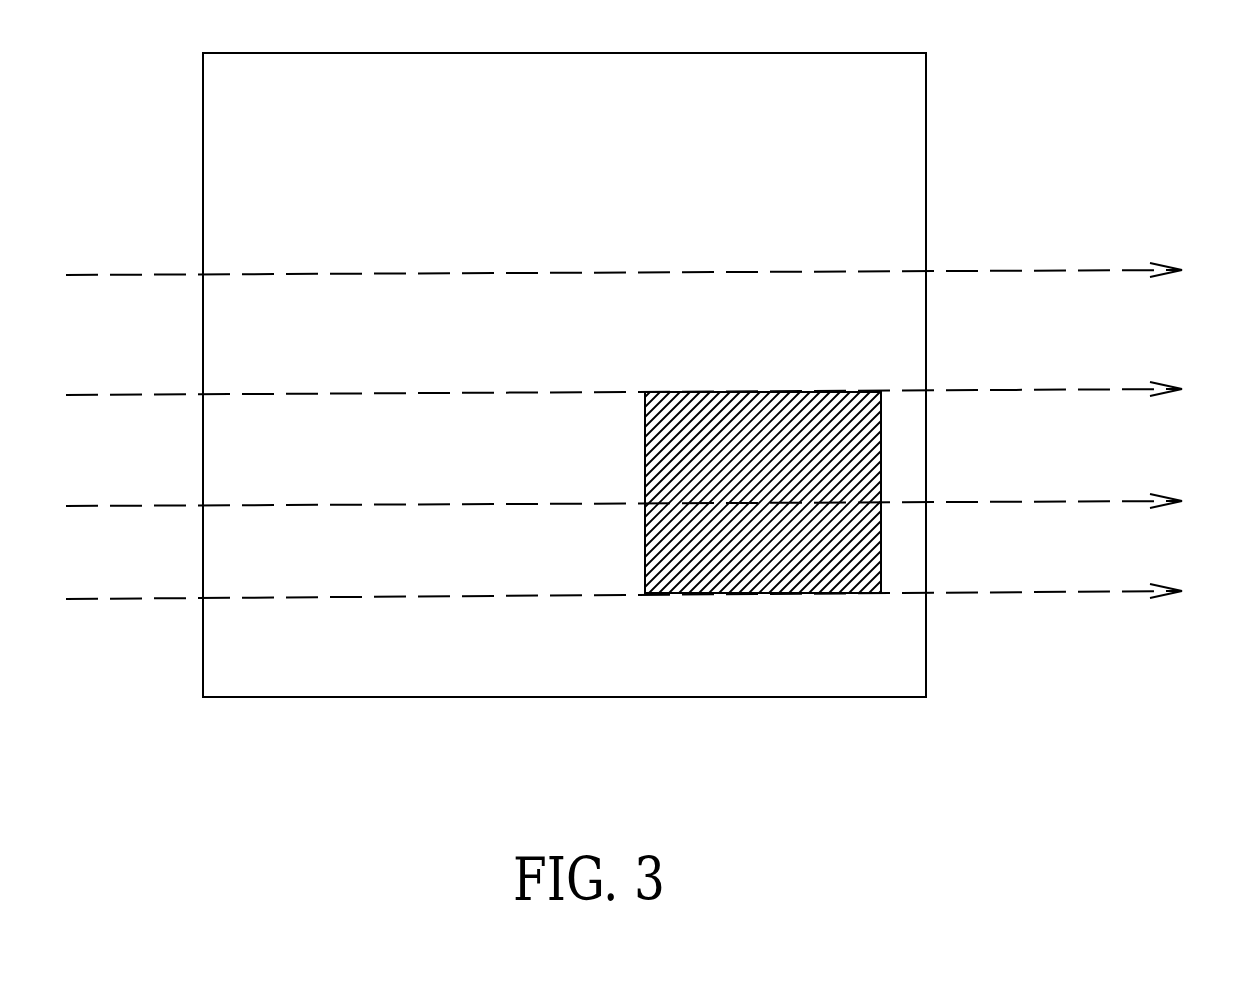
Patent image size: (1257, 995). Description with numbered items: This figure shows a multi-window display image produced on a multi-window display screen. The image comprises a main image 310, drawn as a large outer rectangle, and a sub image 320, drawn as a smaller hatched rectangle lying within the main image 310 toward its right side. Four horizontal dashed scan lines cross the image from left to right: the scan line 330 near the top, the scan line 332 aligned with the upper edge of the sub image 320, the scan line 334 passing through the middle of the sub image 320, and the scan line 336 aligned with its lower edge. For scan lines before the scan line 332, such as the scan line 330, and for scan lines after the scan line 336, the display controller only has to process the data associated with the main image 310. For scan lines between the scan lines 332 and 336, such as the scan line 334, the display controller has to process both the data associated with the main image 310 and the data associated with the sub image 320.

The main image 310 is at (607, 683).
The sub image 320 is at (775, 594).
The scan line 330 is at (654, 267).
The scan line 332 is at (654, 387).
The scan line 334 is at (654, 507).
The scan line 336 is at (654, 593).